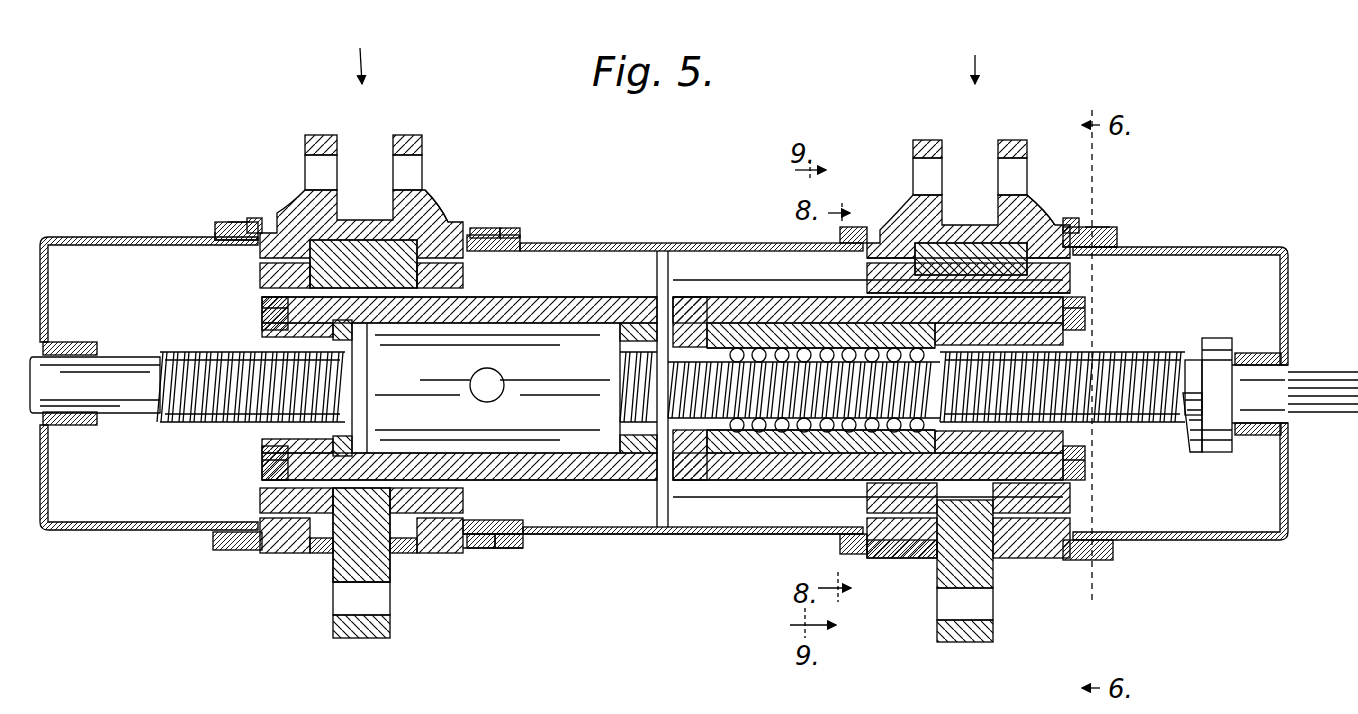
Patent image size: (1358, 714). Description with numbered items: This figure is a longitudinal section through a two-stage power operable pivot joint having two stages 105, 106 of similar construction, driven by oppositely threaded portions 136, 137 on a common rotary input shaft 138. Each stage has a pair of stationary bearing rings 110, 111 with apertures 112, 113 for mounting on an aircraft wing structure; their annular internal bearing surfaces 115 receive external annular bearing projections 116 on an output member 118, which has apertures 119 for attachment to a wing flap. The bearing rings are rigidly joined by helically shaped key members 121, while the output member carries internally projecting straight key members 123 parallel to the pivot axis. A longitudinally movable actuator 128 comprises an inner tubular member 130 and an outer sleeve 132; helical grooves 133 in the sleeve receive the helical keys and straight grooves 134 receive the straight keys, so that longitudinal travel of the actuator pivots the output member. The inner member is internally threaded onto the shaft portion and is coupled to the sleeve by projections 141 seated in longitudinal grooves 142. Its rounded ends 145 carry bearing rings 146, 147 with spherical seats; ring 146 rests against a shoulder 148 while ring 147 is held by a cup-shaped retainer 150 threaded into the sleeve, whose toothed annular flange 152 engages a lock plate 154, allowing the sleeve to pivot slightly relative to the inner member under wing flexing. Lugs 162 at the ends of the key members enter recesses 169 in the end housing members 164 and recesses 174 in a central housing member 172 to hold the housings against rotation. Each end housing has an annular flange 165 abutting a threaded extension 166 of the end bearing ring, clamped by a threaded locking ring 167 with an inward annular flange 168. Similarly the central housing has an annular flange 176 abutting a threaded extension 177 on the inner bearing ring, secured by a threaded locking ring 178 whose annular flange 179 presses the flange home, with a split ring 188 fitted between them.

The first stage 105 is at (356, 53).
The second stage 106 is at (976, 57).
The stationary bearing ring 110 is at (305, 200).
The stationary bearing ring 111 is at (428, 205).
The aperture 112 is at (318, 140).
The aperture 113 is at (410, 140).
The annular internal bearing surface 115 is at (368, 246).
The external annular bearing projection 116 is at (300, 553).
The output member 118 is at (342, 572).
The aperture 119 is at (380, 640).
The helical key member 121 is at (1078, 290).
The straight key member 123 is at (262, 270).
The slider or actuator 128 is at (602, 243).
The inner tubular member 130 is at (572, 492).
The outer sleeve 132 is at (545, 294).
The helical groove 133 is at (757, 290).
The straight groove 134 is at (530, 250).
The threaded portion 136 is at (195, 420).
The threaded portion 137 is at (1200, 352).
The rotary input shaft 138 is at (1300, 370).
The projection 141 is at (495, 400).
The groove 142 is at (1075, 342).
The rounded end 145 is at (760, 432).
The bearing ring 146 is at (620, 336).
The bearing ring 147 is at (420, 420).
The shoulder 148 is at (615, 322).
The cup-shaped retainer 150 is at (265, 322).
The annular flange 152 is at (265, 308).
The lock plate 154 is at (262, 465).
The lug 162 is at (870, 290).
The end housing member 164 is at (95, 237).
The annular flange 165 is at (225, 228).
The threaded extension 166 is at (252, 222).
The threaded locking ring 167 is at (232, 222).
The annular flange 168 is at (215, 232).
The recess 169 is at (1085, 545).
The central housing member 172 is at (645, 535).
The recess 174 is at (802, 542).
The annular flange 176 is at (497, 228).
The threaded extension 177 is at (480, 236).
The threaded locking ring 178 is at (480, 550).
The annular flange 179 is at (525, 550).
The split ring 188 is at (502, 550).